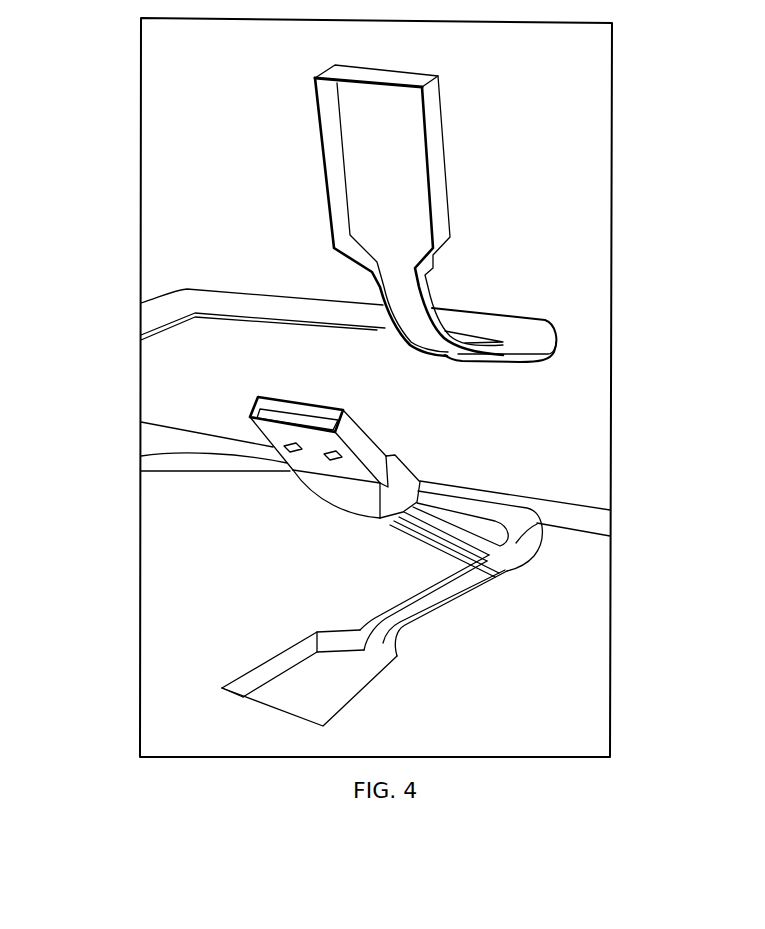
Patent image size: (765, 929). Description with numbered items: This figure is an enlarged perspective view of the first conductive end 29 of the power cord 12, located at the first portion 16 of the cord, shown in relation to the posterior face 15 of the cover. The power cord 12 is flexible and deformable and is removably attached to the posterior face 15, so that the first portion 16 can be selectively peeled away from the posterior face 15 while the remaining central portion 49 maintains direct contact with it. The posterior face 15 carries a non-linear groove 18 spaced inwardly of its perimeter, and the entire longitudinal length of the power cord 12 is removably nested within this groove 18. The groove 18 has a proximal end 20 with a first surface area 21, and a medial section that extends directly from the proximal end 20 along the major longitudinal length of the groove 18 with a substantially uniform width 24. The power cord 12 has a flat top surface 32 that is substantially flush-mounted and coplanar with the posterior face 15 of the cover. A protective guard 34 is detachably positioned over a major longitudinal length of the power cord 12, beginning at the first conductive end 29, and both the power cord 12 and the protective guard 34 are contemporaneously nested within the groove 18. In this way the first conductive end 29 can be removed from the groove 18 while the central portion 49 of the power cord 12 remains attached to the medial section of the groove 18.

The power cord 12 is at (148, 440).
The posterior face 15 is at (583, 632).
The first portion 16 is at (421, 558).
The groove 18 is at (453, 592).
The proximal end 20 is at (370, 700).
The first surface area 21 is at (283, 690).
The uniform width 24 is at (378, 619).
The first conductive end 29 is at (307, 455).
The flat top surface 32 is at (610, 536).
The protective guard 34 is at (435, 135).
The central portion 49 is at (186, 270).